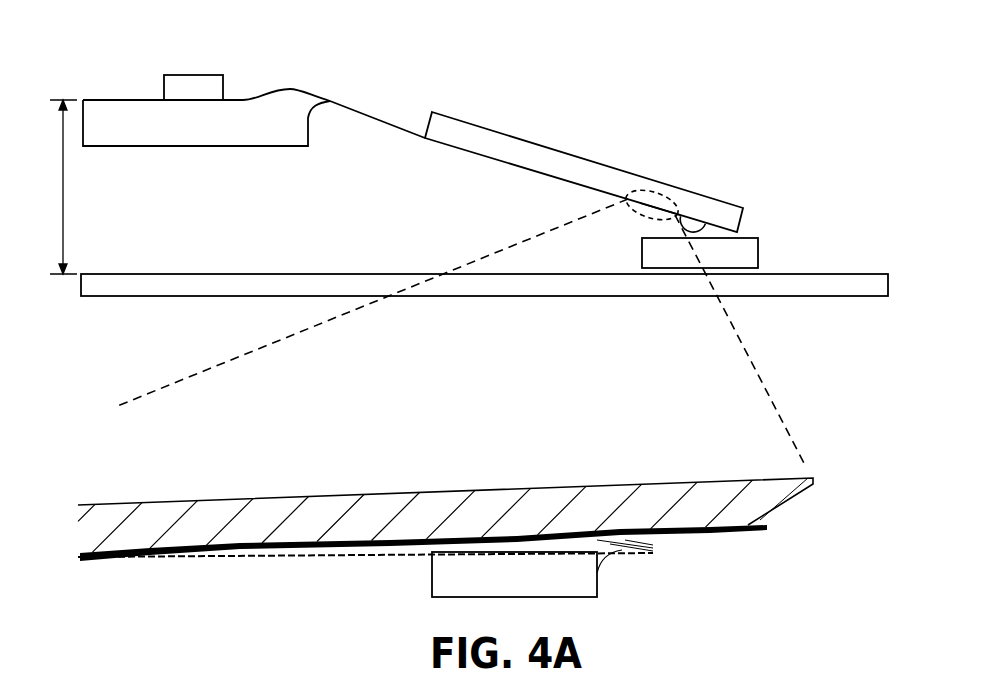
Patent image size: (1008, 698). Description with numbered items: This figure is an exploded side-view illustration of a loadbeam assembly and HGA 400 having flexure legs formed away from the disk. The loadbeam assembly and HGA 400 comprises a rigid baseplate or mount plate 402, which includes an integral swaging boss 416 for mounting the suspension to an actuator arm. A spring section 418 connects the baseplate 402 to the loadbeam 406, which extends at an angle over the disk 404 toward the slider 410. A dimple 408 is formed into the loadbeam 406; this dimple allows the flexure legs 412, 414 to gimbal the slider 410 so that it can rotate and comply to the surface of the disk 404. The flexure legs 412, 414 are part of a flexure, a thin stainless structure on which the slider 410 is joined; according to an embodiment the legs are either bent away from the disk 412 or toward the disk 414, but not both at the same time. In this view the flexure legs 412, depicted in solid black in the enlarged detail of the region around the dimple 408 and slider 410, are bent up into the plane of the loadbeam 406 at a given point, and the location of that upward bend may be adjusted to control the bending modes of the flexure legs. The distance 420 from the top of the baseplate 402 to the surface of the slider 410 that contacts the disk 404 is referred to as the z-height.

The loadbeam assembly and HGA 400 is at (128, 36).
The baseplate 402 is at (207, 148).
The disk 404 is at (405, 270).
The loadbeam 406 is at (572, 150).
The dimple 408 is at (684, 233).
The slider 410 is at (760, 247).
The flexure legs bent away from the disk 412 is at (668, 190).
The flexure legs bent toward the disk 414 is at (642, 218).
The swaging boss 416 is at (198, 70).
The spring section 418 is at (375, 112).
The z-height distance 420 is at (74, 187).